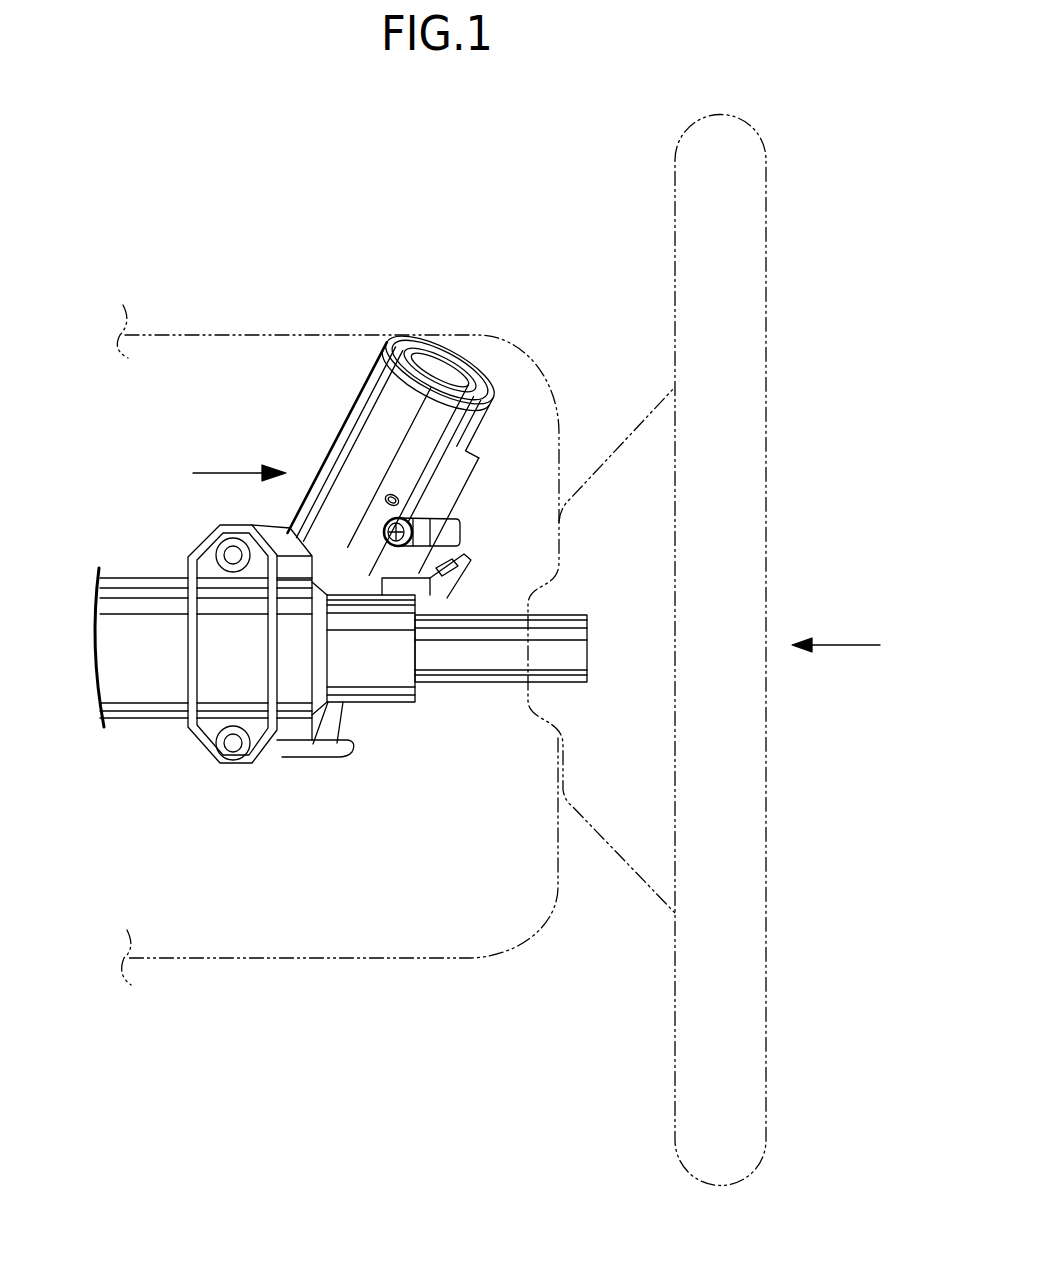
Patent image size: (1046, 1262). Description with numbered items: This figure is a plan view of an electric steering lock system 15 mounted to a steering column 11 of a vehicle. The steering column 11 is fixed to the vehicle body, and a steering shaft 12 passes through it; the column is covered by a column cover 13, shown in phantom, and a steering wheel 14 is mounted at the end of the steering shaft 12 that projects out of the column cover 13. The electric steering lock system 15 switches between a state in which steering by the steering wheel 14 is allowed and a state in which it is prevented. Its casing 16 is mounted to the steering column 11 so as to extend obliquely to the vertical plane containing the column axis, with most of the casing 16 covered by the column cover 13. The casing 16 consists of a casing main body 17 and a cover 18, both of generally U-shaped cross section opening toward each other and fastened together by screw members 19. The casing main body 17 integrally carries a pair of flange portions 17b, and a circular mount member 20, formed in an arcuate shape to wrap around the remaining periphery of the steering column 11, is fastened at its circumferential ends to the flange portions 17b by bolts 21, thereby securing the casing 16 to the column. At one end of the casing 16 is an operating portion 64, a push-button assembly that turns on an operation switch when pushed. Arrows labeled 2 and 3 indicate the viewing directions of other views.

The viewing direction arrow for FIG. 2 is at (836, 620).
The viewing direction arrow for FIG. 3 is at (239, 450).
The steering column 11 is at (146, 600).
The steering shaft 12 is at (496, 672).
The column cover 13 is at (233, 335).
The steering wheel 14 is at (683, 307).
The electric steering lock system 15 is at (344, 424).
The casing 16 is at (598, 322).
The casing main body 17 is at (443, 413).
The flange portions 17b is at (278, 532).
The cover 18 is at (462, 490).
The screw members 19 is at (384, 526).
The circular mount member 20 is at (222, 673).
The bolts 21 is at (224, 562).
The operating portion 64 is at (443, 345).